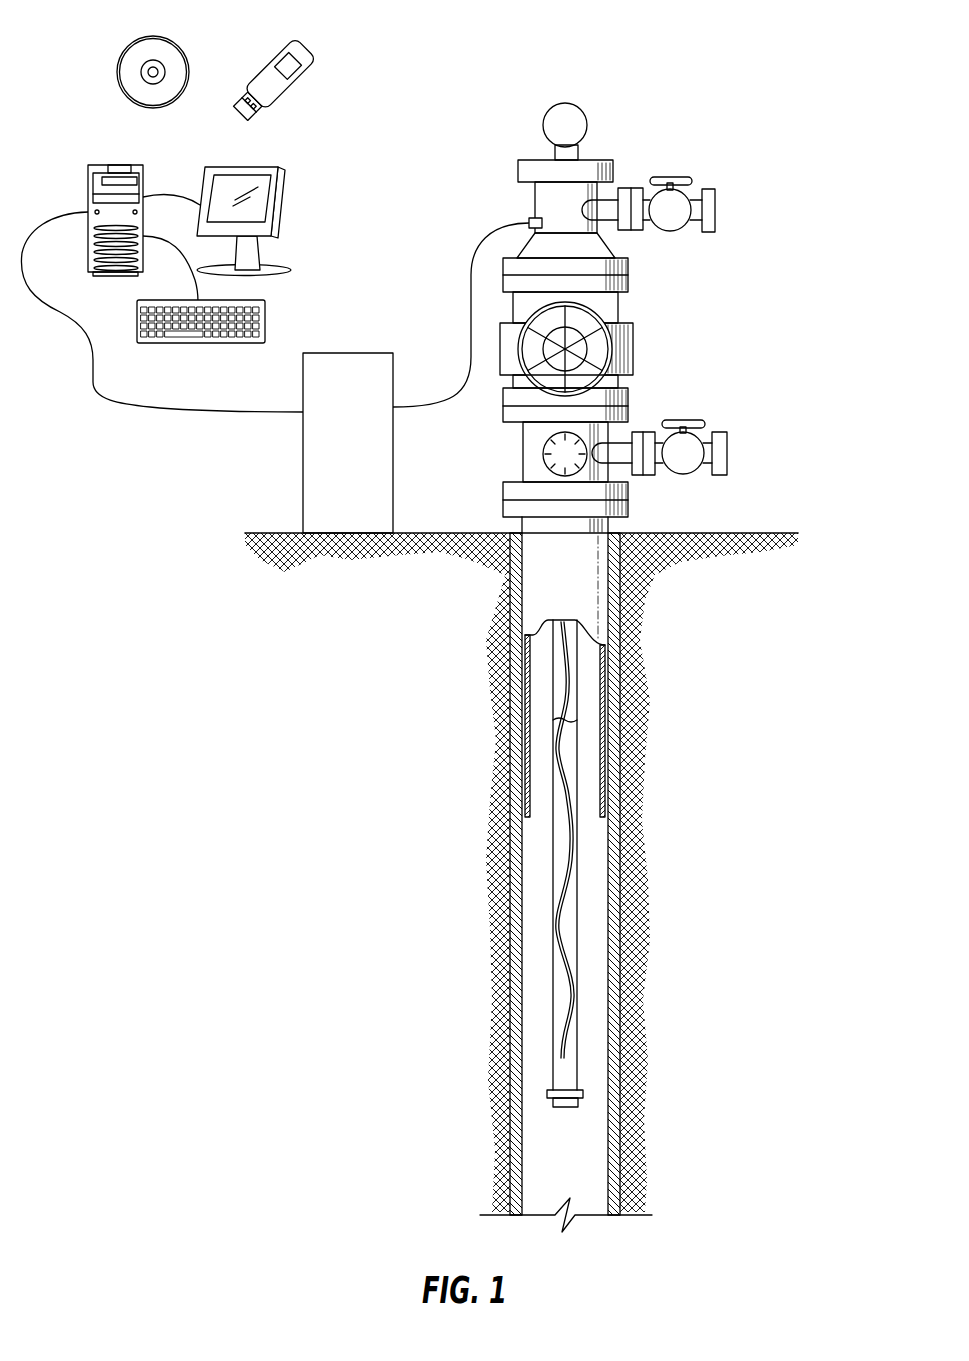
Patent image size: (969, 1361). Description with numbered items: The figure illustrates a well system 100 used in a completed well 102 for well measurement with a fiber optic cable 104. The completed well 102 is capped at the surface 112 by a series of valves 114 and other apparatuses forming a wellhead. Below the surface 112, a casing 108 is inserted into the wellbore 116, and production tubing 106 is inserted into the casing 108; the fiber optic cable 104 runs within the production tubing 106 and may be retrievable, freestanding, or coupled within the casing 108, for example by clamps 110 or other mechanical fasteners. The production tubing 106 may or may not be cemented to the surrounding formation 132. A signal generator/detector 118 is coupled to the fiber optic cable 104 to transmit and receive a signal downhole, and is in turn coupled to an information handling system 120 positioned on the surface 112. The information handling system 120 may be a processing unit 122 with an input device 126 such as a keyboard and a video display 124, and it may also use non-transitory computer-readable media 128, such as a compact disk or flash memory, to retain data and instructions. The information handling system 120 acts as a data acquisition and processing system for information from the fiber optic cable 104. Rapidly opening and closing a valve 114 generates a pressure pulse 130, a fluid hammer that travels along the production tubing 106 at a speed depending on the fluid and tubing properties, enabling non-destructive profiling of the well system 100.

The well system 100 is at (780, 54).
The completed well 102 is at (806, 649).
The fiber optic cable 104 is at (555, 675).
The production tubing 106 is at (572, 793).
The casing 108 is at (527, 783).
The clamps 110 is at (583, 748).
The surface 112 is at (474, 514).
The valves 114 is at (790, 160).
The wellbore 116 is at (617, 587).
The signal generator/detector 118 is at (372, 459).
The information handling system 120 is at (306, 144).
The processing unit 122 is at (103, 165).
The video display 124 is at (277, 201).
The input device 126 is at (265, 318).
The non-transitory computer-readable media 128 is at (129, 46).
The pressure pulse 130 is at (563, 720).
The formation 132 is at (377, 744).